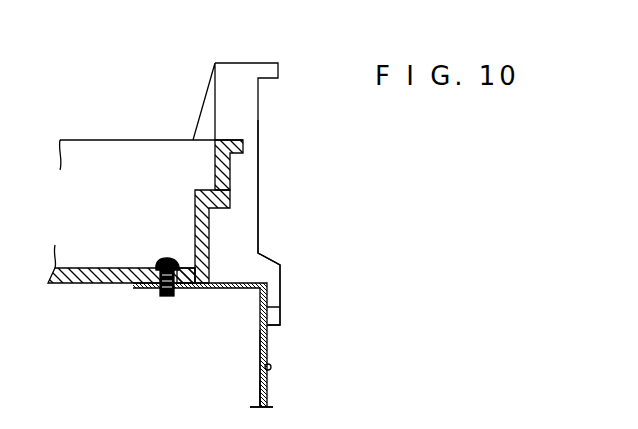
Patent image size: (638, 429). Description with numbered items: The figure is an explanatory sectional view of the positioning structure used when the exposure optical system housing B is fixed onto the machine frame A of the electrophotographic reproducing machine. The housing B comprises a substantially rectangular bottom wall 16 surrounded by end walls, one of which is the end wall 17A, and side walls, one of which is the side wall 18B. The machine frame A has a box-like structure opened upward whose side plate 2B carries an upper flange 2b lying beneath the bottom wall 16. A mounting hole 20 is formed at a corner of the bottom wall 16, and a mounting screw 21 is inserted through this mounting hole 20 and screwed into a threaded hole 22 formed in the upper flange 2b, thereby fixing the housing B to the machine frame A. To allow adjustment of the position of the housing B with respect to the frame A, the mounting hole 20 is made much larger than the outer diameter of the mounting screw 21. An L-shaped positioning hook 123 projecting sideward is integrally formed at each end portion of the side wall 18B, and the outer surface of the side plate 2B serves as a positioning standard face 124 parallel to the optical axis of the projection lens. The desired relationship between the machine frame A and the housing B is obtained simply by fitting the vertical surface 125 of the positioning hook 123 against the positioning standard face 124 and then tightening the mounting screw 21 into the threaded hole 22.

The end wall 17A is at (127, 155).
The side wall 18B is at (218, 198).
The positioning hook 123 is at (265, 264).
The vertical surface 125 is at (277, 302).
The mounting screw 21 is at (160, 260).
The threaded hole 22 is at (162, 293).
The mounting hole 20 is at (187, 288).
The bottom wall 16 is at (67, 279).
The upper flange 2b is at (230, 289).
The positioning standard face 124 is at (264, 369).
The side plate 2B is at (260, 395).
The machine frame A is at (280, 379).
The exposure optical system housing B is at (295, 110).